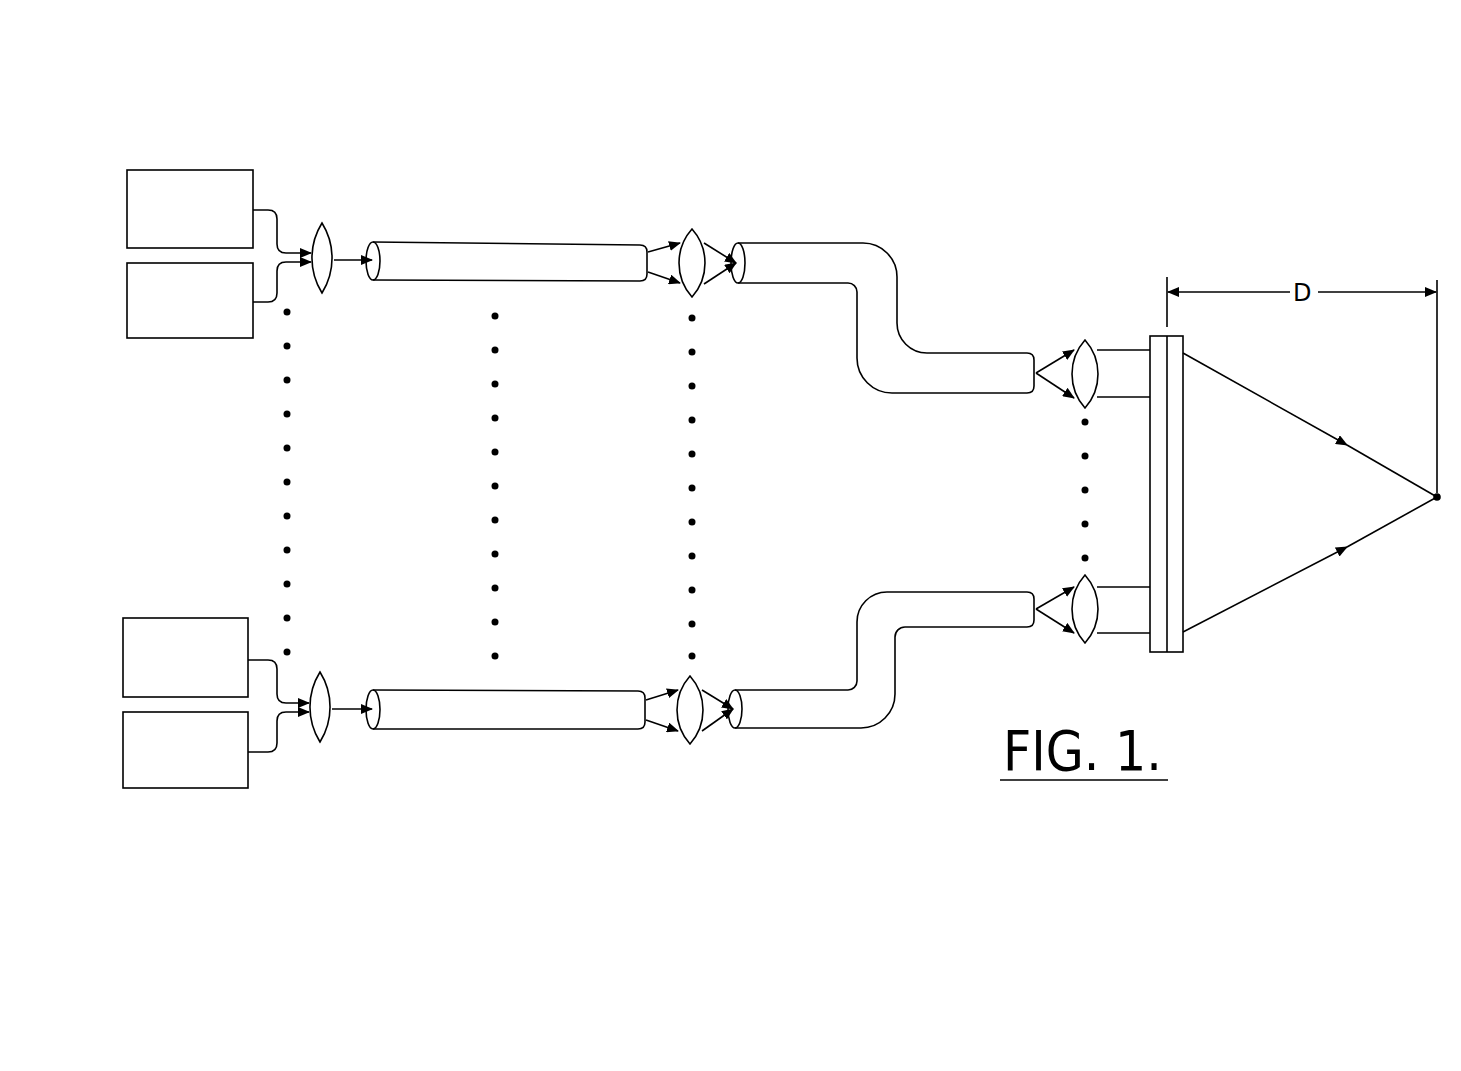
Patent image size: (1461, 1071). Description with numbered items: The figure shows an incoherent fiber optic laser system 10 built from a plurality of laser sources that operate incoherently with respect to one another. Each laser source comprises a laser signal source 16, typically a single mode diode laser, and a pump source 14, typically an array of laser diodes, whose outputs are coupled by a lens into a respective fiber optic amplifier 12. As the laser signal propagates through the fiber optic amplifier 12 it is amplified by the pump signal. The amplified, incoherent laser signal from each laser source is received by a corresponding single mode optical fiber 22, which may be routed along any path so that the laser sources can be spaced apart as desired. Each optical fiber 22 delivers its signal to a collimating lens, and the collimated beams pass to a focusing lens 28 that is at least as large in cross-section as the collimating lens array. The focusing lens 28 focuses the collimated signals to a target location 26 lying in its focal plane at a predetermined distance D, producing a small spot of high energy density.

The incoherent fiber optic laser system 10 is at (923, 240).
The fiber optic amplifier 12 is at (510, 240).
The pump source 14 is at (198, 338).
The laser signal source 16 is at (198, 170).
The single mode optical fiber 22 is at (940, 352).
The target location 26 is at (1437, 500).
The focusing lens 28 is at (1183, 466).